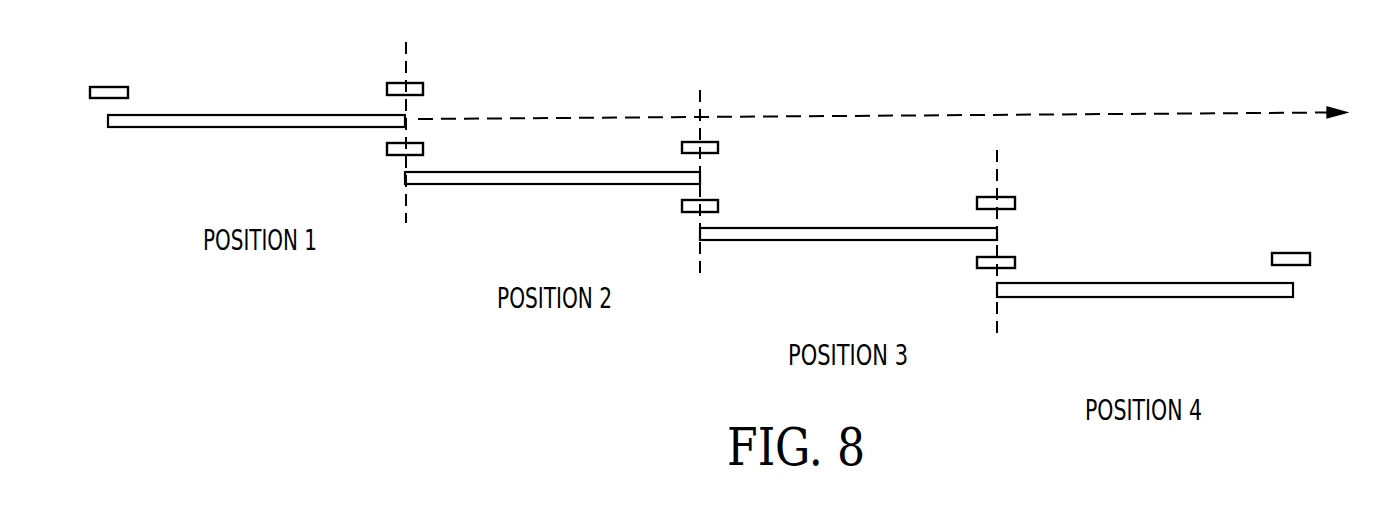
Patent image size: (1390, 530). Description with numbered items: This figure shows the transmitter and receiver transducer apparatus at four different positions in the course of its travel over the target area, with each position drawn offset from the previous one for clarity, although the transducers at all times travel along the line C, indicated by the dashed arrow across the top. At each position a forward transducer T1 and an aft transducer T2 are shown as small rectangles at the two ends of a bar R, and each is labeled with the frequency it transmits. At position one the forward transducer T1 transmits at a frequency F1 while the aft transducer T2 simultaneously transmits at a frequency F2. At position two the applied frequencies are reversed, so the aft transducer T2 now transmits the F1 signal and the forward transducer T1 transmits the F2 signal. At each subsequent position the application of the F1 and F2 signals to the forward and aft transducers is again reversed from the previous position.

The first transmitting frequency F1 is at (699, 176).
The second transmitting frequency F2 is at (699, 174).
The forward transducer T1 is at (1282, 253).
The aft transducer T2 is at (117, 87).
The rail R is at (278, 127).
The line of travel C is at (895, 113).